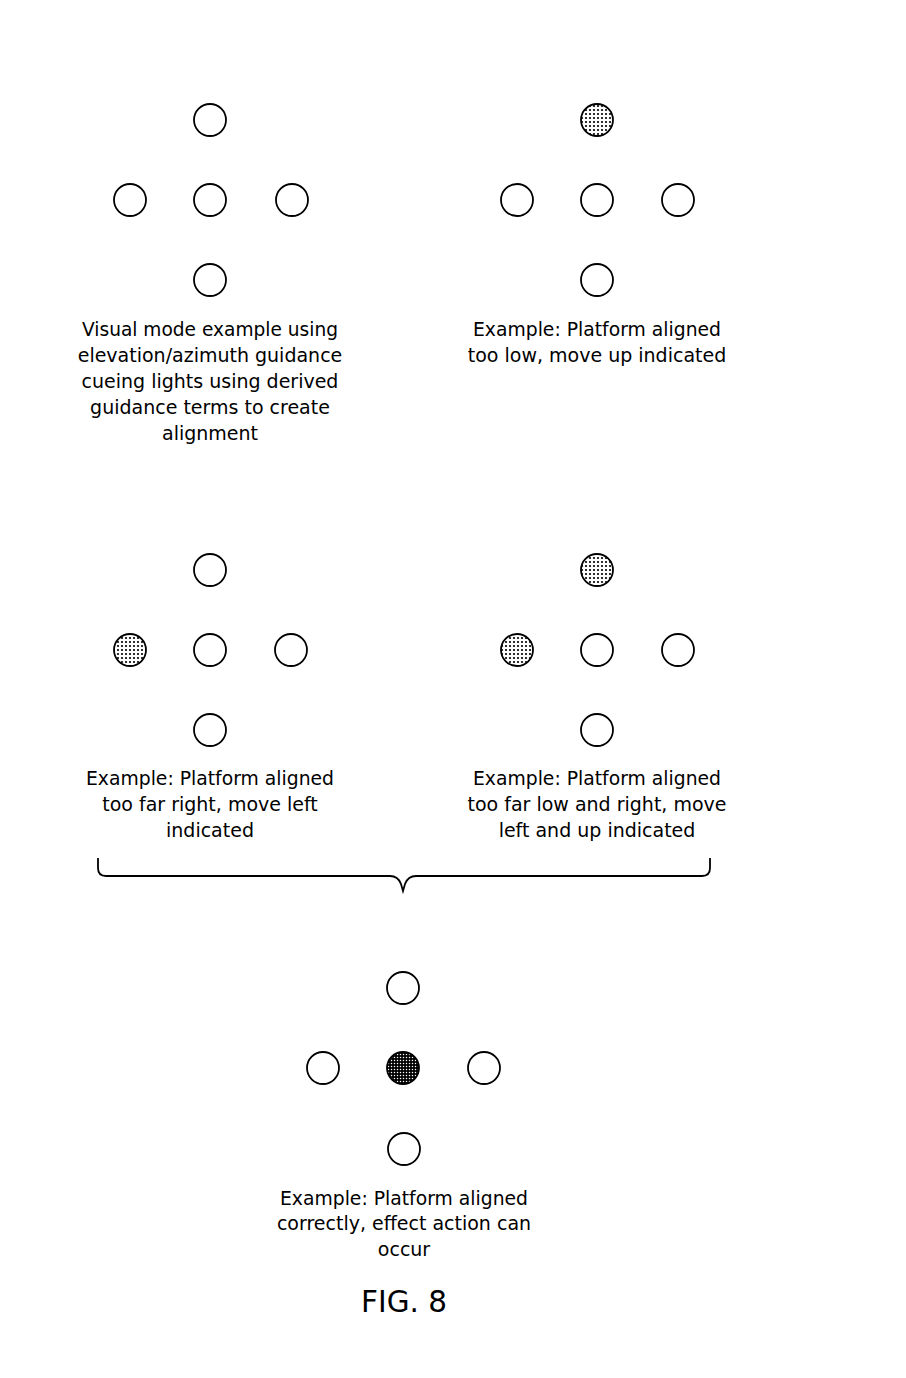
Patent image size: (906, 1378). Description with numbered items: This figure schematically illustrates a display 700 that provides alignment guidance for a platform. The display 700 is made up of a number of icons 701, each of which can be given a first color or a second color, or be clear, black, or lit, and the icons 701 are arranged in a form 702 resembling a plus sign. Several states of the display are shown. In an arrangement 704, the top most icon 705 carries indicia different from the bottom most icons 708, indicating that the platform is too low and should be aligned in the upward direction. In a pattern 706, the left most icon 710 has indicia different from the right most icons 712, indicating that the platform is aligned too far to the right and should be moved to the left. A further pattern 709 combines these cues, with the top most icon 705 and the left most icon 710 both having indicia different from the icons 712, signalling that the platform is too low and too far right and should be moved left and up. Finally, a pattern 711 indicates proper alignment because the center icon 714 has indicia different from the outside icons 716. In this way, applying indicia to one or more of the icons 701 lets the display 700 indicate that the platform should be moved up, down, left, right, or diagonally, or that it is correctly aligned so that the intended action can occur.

The display 700 is at (404, 592).
The icons 701 is at (404, 200).
The form 702 is at (129, 123).
The arrangement 704 is at (672, 126).
The top most icon 705 is at (565, 345).
The pattern 706 is at (285, 576).
The bottom most icons 708 is at (664, 236).
The pattern 709 is at (672, 576).
The left most icon 710 is at (305, 669).
The pattern 711 is at (479, 993).
The right most icons 712 is at (514, 706).
The center icon 714 is at (392, 1057).
The outside icons 716 is at (404, 1068).